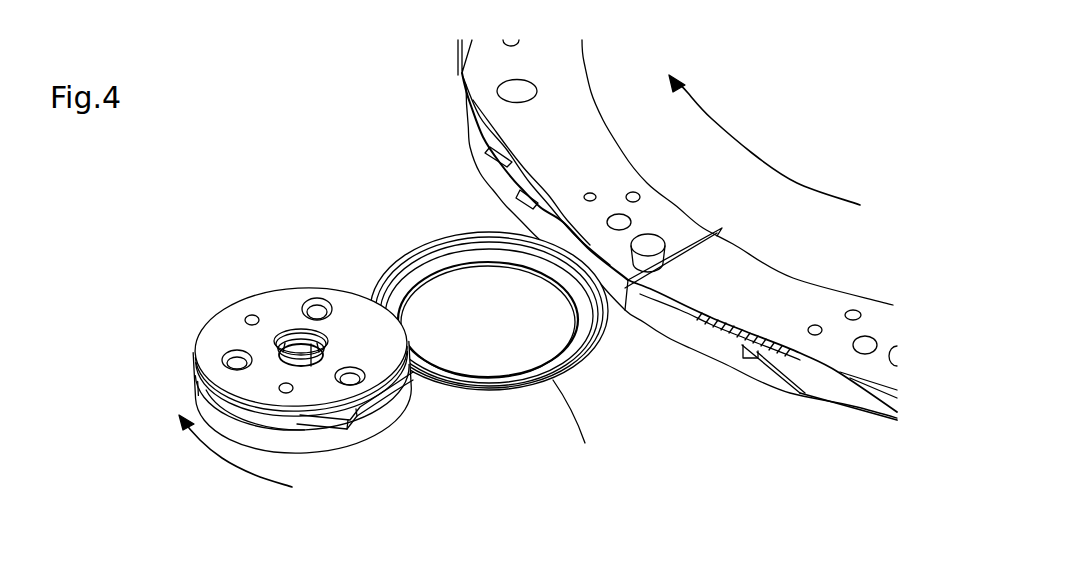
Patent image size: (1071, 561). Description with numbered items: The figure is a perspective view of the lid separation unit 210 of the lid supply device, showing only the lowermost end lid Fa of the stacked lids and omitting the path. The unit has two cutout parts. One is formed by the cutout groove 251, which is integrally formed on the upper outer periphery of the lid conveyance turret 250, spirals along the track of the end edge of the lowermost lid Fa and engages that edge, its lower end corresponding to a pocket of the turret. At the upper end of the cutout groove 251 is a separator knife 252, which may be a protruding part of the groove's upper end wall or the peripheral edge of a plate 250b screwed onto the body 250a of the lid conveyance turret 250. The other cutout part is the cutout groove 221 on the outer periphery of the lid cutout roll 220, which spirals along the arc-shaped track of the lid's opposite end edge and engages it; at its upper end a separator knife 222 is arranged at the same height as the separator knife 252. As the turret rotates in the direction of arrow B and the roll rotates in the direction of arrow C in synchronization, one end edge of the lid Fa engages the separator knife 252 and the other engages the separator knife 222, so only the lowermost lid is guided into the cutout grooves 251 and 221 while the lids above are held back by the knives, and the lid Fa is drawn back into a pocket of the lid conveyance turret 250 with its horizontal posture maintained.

The lid separation unit 210 is at (335, 312).
The lid cutout roll 220 is at (273, 393).
The cutout groove 221 is at (388, 408).
The separator knife 222 is at (360, 400).
The lid conveyance turret 250 is at (610, 261).
The body 250a is at (777, 390).
The plate 250b is at (737, 315).
The cutout groove 251 is at (540, 208).
The separator knife 252 is at (508, 160).